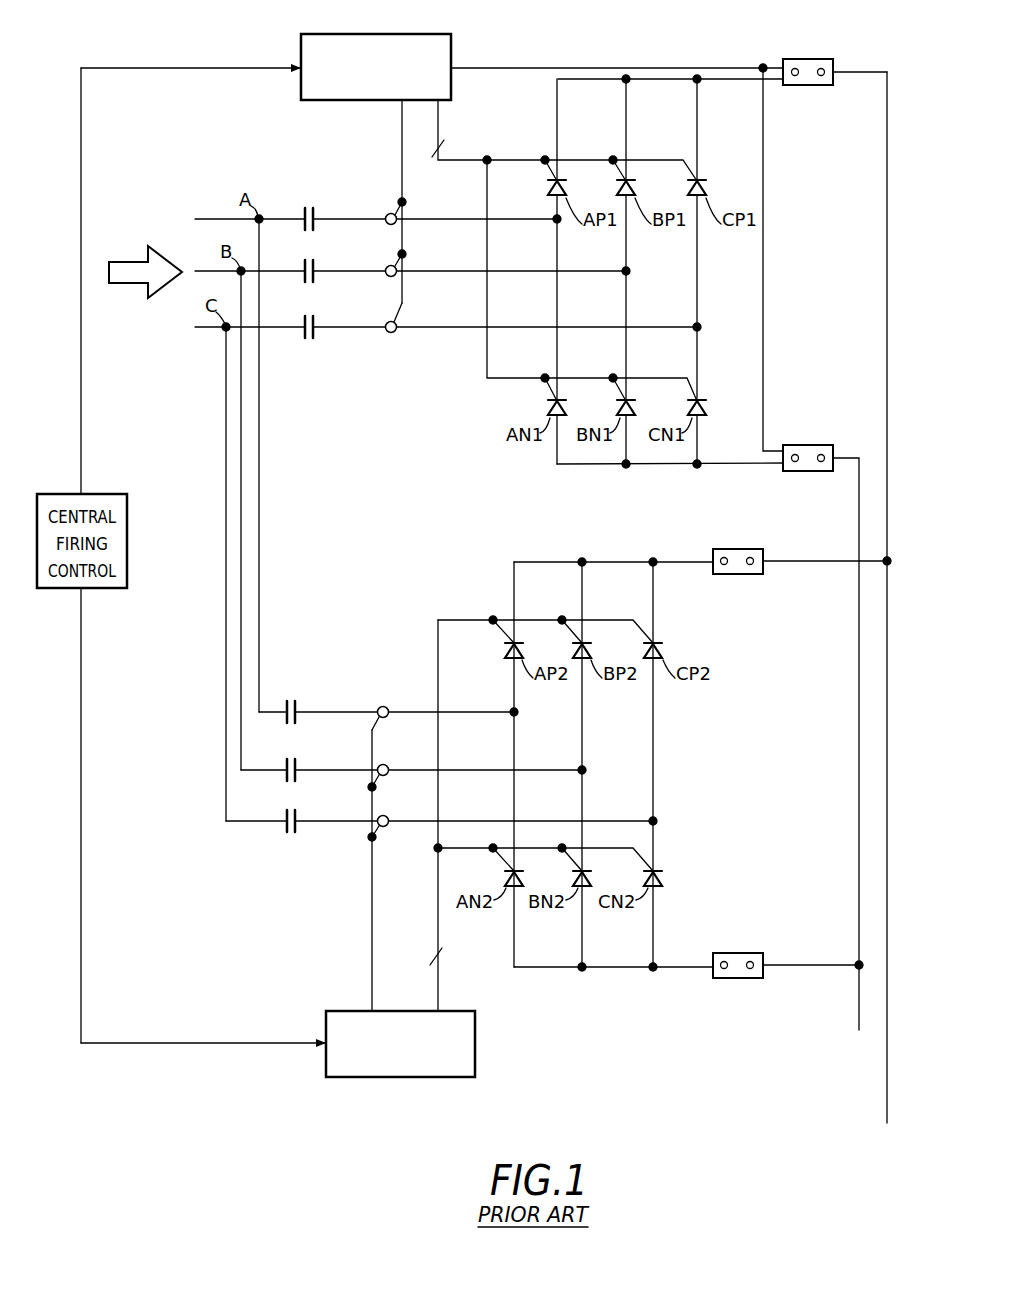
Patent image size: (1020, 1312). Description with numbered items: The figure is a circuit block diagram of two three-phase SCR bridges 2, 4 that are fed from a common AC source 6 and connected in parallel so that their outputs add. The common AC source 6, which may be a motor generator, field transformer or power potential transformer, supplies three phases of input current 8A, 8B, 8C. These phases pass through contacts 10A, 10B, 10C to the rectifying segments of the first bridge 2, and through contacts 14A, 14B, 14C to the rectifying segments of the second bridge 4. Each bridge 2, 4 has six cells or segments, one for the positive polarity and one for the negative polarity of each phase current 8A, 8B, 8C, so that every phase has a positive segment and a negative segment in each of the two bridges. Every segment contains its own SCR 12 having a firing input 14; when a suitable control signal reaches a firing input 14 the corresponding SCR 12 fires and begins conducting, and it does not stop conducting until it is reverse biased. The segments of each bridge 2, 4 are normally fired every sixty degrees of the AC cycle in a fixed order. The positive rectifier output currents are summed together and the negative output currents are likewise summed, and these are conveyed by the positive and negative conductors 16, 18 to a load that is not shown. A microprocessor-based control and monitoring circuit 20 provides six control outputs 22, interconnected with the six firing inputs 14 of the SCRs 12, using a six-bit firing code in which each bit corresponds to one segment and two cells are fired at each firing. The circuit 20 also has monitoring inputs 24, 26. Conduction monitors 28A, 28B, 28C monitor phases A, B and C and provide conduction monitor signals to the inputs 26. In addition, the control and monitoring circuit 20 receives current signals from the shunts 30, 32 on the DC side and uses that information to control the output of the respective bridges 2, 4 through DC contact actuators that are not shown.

The first controlled rectifier bridge 2 is at (836, 251).
The second controlled rectifier bridge 4 is at (748, 789).
The common AC source 6 is at (134, 262).
The phase A input current 8A is at (200, 218).
The phase B input current 8B is at (202, 270).
The phase C input current 8C is at (202, 328).
The phase A contact of first bridge 10A is at (304, 208).
The phase B contact of first bridge 10B is at (316, 260).
The phase C contact of first bridge 10C is at (316, 338).
The SCR 12 is at (566, 186).
The firing input 14 is at (545, 176).
The phase A contact of second bridge 14A is at (294, 702).
The phase B contact of second bridge 14B is at (294, 760).
The phase C contact of second bridge 14C is at (294, 812).
The positive conductor 16 is at (886, 1088).
The negative conductor 18 is at (858, 1003).
The control and monitoring circuit 20 is at (366, 34).
The control outputs 22 is at (440, 106).
The monitoring input 24 is at (454, 64).
The monitoring inputs 26 is at (400, 106).
The phase A conduction monitor 28A is at (388, 212).
The phase B conduction monitor 28B is at (387, 277).
The phase C conduction monitor 28C is at (395, 333).
The shunt 30 is at (798, 58).
The shunt 32 is at (800, 444).